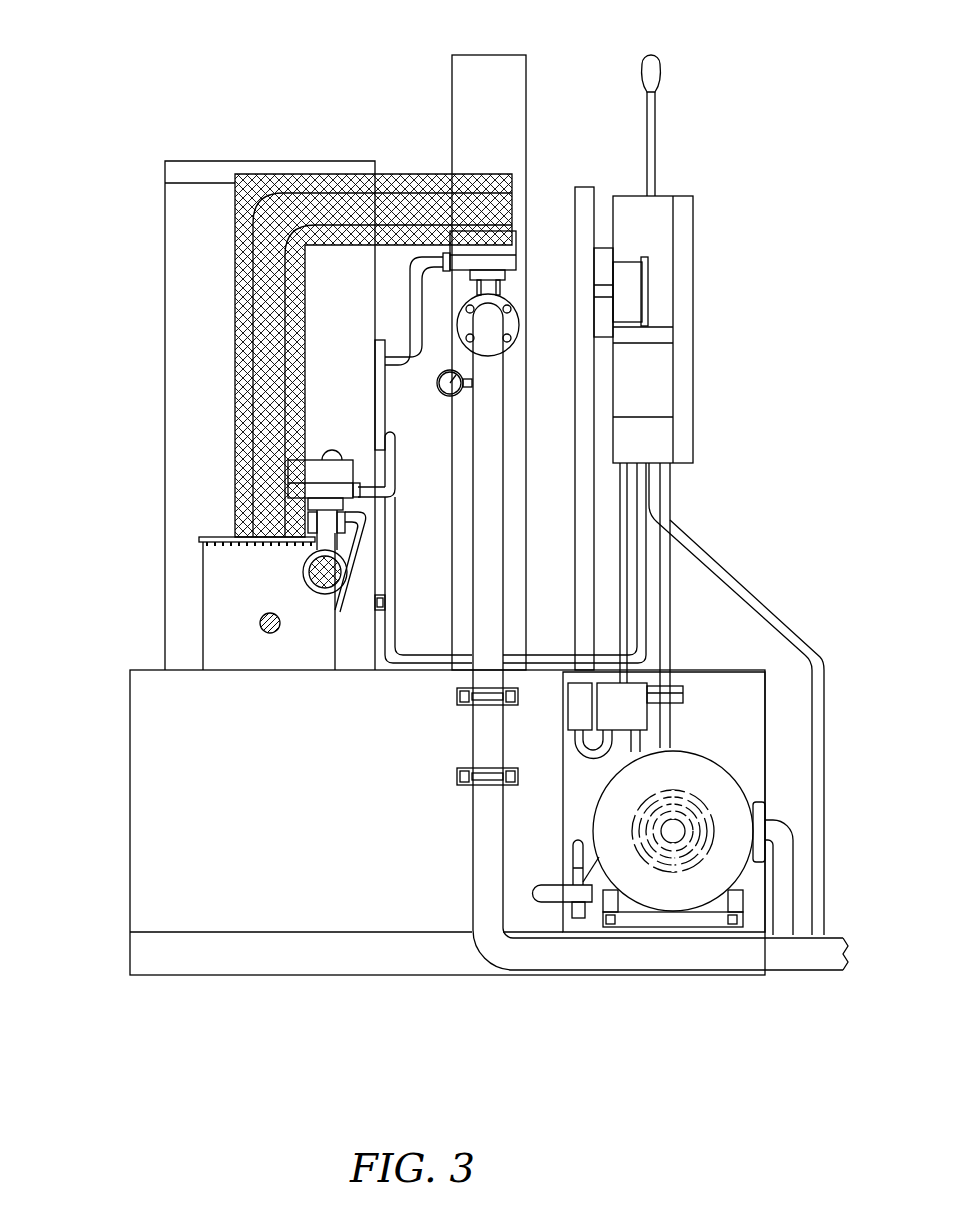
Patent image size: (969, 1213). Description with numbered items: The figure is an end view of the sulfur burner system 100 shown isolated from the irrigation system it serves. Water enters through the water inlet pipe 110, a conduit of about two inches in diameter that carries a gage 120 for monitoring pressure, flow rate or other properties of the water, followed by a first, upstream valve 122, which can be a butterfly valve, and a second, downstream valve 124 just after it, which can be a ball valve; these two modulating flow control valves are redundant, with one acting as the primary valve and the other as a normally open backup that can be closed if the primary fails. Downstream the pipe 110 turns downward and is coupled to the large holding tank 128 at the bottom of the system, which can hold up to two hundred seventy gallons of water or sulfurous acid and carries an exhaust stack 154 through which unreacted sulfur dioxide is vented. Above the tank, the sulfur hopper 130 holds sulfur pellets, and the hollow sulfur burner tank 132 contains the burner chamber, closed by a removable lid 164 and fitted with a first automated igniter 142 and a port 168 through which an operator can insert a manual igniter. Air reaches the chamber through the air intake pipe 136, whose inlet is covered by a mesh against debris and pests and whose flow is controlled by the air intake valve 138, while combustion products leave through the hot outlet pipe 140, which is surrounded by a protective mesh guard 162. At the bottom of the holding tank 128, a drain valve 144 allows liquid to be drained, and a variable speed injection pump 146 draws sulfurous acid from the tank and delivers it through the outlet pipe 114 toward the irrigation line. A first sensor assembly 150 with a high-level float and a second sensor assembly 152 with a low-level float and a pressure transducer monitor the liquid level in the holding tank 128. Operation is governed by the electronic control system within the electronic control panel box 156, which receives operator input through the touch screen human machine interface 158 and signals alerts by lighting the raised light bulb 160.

The sulfur burner system 100 is at (157, 60).
The water inlet pipe 110 is at (487, 565).
The outlet pipe 114 is at (778, 838).
The gage 120 is at (448, 397).
The upstream valve 122 is at (500, 297).
The downstream valve 124 is at (500, 256).
The holding tank 128 is at (172, 880).
The sulfur hopper 130 is at (197, 440).
The sulfur burner tank 132 is at (216, 608).
The air intake pipe 136 is at (303, 572).
The air intake valve 138 is at (334, 539).
The outlet pipe 140 is at (268, 343).
The first automated igniter 142 is at (343, 618).
The drain valve 144 is at (535, 893).
The variable speed injection pump 146 is at (724, 756).
The first sensor assembly 150 is at (582, 708).
The second sensor assembly 152 is at (575, 915).
The exhaust stack 154 is at (505, 92).
The electronic control panel box 156 is at (655, 228).
The touch screen human machine interface 158 is at (632, 288).
The light bulb 160 is at (658, 66).
The mesh guard 162 is at (405, 182).
The removable lid 164 is at (202, 535).
The port 168 is at (260, 626).